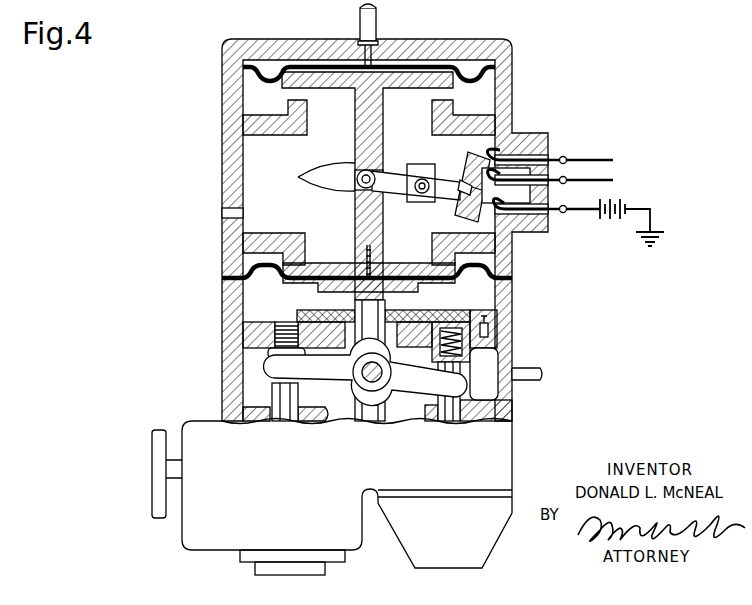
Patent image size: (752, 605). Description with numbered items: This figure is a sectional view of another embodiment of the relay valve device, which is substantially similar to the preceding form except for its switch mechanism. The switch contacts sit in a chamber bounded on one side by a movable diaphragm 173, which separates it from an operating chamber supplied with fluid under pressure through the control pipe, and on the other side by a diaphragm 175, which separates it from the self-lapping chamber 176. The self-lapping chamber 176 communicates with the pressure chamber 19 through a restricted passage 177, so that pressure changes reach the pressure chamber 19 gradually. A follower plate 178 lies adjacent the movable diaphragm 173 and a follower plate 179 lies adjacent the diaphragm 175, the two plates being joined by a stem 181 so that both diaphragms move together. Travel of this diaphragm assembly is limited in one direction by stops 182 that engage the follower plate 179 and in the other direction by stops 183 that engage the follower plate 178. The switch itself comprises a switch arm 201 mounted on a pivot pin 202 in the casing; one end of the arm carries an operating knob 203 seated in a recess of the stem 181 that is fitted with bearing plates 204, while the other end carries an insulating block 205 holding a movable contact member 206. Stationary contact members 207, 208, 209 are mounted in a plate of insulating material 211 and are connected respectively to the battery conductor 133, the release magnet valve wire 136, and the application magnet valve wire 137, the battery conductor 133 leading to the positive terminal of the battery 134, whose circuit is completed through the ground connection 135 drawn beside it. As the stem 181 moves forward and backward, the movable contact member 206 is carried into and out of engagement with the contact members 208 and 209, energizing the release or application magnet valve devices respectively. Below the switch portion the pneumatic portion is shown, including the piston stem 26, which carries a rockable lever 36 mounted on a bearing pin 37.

The pressure chamber 19 is at (486, 358).
The piston stem 26 is at (337, 334).
The rockable lever 36 is at (423, 372).
The bearing pin 37 is at (357, 379).
The battery conductor 133 is at (574, 218).
The battery 134 is at (624, 207).
The ground connection 135 is at (660, 240).
The release magnet valve wire 136 is at (590, 177).
The application magnet valve wire 137 is at (590, 157).
The movable diaphragm 173 is at (460, 66).
The diaphragm 175 is at (490, 268).
The self-lapping chamber 176 is at (482, 303).
The restricted passage 177 is at (488, 333).
The follower plate 178 is at (326, 80).
The follower plate 179 is at (346, 266).
The stem 181 is at (378, 113).
The stops 182 is at (298, 257).
The stops 183 is at (297, 113).
The switch arm 201 is at (386, 166).
The pivot pin 202 is at (432, 170).
The operating knob 203 is at (357, 178).
The bearing plates 204 is at (308, 177).
The insulating block 205 is at (457, 204).
The movable contact member 206 is at (474, 217).
The stationary contact member 207 is at (512, 210).
The stationary contact member 208 is at (548, 152).
The stationary contact member 209 is at (514, 162).
The plate of insulating material 211 is at (548, 198).